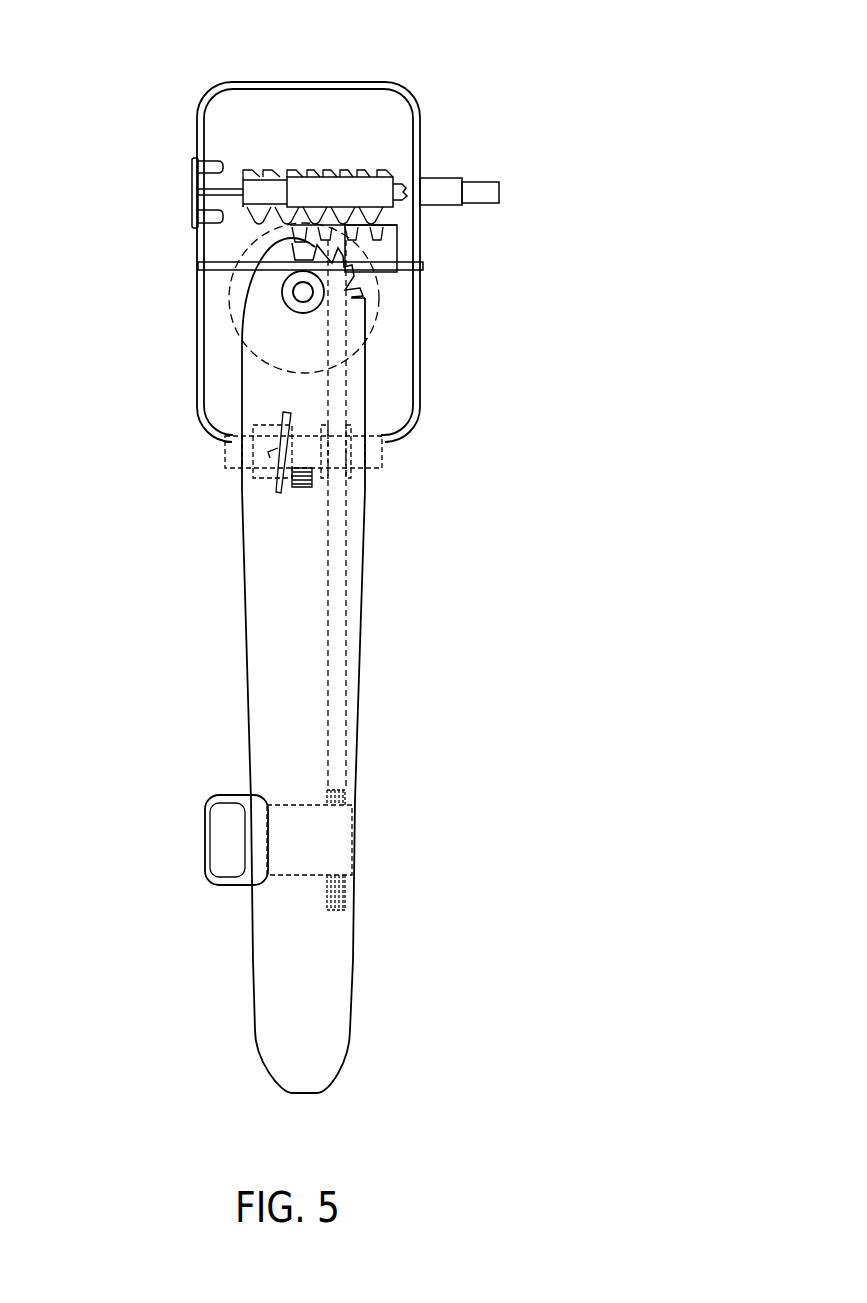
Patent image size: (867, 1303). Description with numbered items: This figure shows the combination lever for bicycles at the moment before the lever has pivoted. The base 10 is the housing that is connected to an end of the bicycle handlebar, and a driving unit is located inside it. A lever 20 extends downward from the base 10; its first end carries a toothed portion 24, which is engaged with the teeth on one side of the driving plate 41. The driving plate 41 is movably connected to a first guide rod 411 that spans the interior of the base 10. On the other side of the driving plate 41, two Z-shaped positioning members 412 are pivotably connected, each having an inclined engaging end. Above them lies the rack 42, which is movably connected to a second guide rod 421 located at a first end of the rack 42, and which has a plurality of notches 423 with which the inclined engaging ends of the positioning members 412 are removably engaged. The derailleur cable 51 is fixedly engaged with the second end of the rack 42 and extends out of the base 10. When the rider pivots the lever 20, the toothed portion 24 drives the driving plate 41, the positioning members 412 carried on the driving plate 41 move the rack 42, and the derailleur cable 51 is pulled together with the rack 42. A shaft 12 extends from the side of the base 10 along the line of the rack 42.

The base 10 is at (340, 82).
The drive shaft 12 is at (440, 183).
The lever 20 is at (290, 667).
The toothed portion 24 is at (315, 242).
The driving plate 41 is at (387, 265).
The first guide rod 411 is at (210, 266).
The positioning members 412 is at (380, 228).
The rack 42 is at (303, 183).
The second guide rod 421 is at (210, 191).
The notches 423 is at (277, 193).
The derailleur cable 51 is at (401, 192).